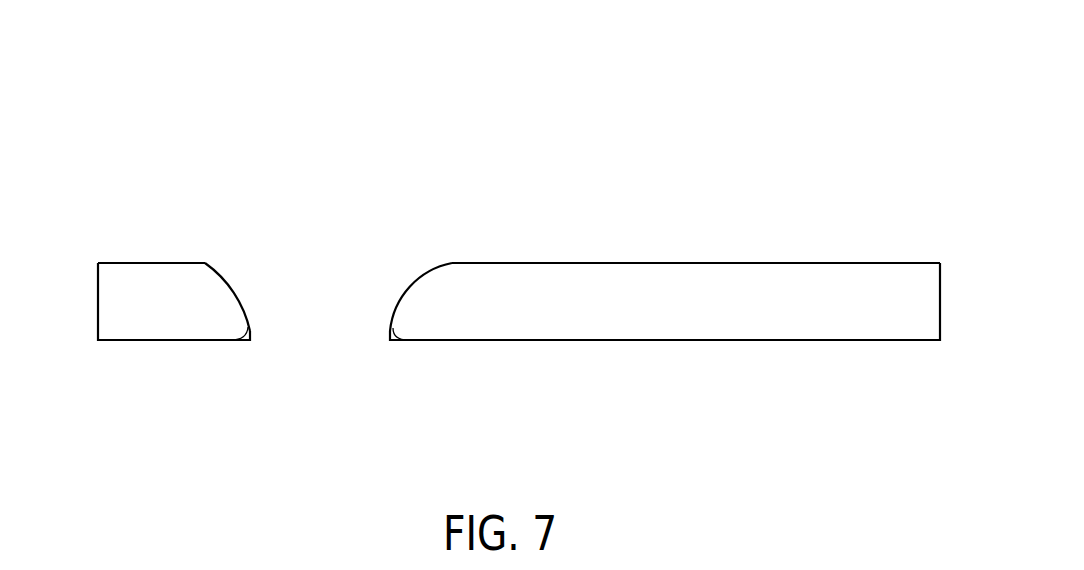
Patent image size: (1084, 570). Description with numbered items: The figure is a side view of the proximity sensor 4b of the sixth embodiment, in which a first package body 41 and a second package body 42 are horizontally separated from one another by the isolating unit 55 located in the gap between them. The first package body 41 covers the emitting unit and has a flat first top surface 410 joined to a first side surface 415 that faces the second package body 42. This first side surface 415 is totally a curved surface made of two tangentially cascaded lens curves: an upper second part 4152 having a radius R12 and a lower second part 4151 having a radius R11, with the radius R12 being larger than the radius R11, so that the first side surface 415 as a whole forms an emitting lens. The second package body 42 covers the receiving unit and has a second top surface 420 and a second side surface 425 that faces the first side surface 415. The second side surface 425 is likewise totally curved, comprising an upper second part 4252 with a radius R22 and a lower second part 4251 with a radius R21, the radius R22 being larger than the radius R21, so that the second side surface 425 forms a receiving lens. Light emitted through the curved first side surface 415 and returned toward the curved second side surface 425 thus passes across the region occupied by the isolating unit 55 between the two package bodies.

The proximity sensor 4b is at (765, 102).
The first package body 41 is at (95, 262).
The first top surface 410 is at (138, 263).
The first side surface 415 is at (277, 432).
The lower second part 4151 is at (230, 341).
The upper second part 4152 is at (215, 273).
The radius R11 is at (313, 312).
The radius R12 is at (283, 235).
The isolating unit 55 is at (323, 293).
The second package body 42 is at (903, 260).
The second top surface 420 is at (835, 262).
The second side surface 425 is at (520, 432).
The lower second part 4251 is at (410, 341).
The upper second part 4252 is at (432, 275).
The radius R21 is at (392, 325).
The radius R22 is at (423, 282).